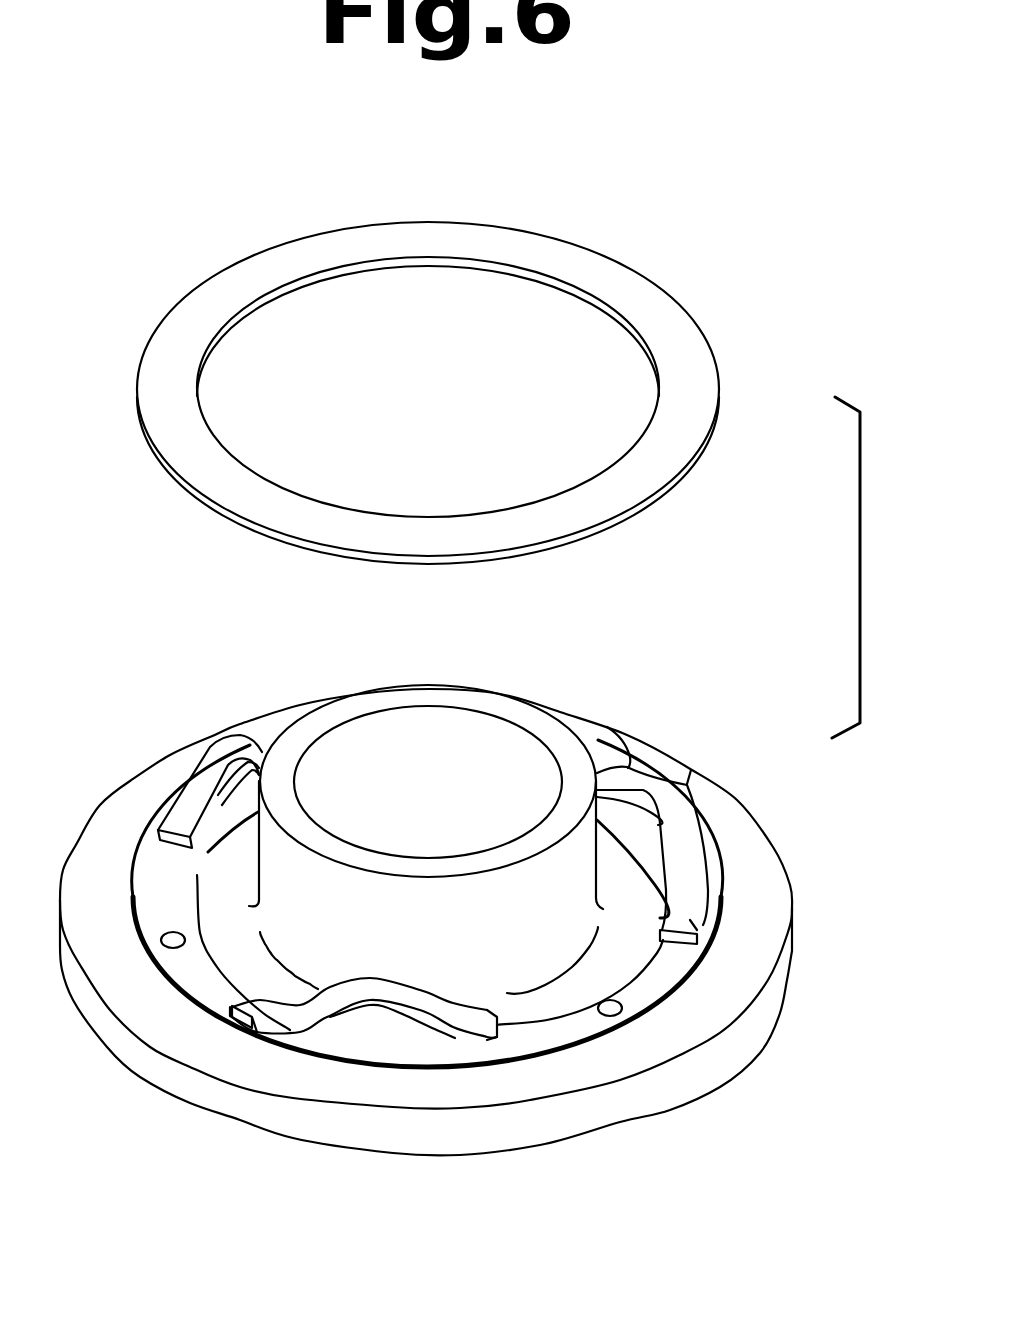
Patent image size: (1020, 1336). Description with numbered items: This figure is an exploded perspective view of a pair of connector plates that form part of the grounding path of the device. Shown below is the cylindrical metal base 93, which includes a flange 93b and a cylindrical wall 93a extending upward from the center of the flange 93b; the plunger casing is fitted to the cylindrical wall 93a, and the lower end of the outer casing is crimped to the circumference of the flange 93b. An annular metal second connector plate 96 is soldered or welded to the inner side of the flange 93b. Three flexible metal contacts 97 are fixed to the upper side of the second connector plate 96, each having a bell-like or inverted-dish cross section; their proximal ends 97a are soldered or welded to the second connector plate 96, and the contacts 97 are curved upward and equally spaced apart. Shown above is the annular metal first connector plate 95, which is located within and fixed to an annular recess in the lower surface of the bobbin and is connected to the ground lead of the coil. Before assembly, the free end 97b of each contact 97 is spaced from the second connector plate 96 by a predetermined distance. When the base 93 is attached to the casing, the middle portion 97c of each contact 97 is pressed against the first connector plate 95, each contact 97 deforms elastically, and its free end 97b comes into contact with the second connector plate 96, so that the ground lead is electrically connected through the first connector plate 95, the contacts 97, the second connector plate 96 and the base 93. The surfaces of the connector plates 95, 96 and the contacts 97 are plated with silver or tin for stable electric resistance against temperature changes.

The base 93 is at (431, 904).
The cylindrical wall 93a is at (470, 688).
The flange 93b is at (683, 1083).
The first connector plate 95 is at (697, 331).
The second connector plate 96 is at (523, 1048).
The contact 97 is at (212, 742).
The proximal end 97a is at (253, 1013).
The free end 97b is at (612, 728).
The middle portion 97c is at (690, 768).